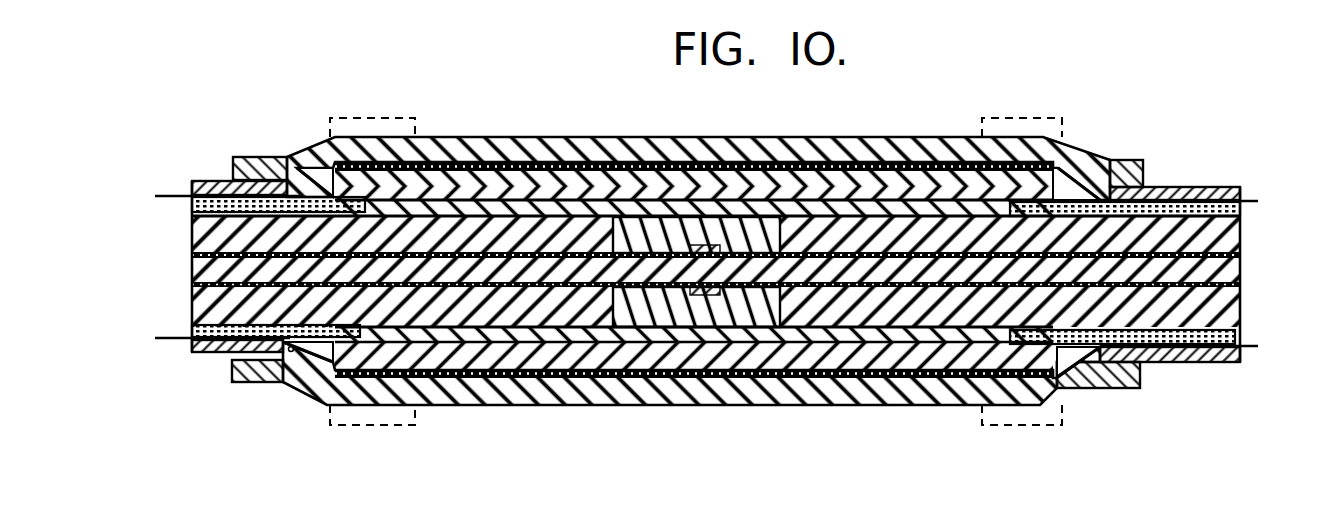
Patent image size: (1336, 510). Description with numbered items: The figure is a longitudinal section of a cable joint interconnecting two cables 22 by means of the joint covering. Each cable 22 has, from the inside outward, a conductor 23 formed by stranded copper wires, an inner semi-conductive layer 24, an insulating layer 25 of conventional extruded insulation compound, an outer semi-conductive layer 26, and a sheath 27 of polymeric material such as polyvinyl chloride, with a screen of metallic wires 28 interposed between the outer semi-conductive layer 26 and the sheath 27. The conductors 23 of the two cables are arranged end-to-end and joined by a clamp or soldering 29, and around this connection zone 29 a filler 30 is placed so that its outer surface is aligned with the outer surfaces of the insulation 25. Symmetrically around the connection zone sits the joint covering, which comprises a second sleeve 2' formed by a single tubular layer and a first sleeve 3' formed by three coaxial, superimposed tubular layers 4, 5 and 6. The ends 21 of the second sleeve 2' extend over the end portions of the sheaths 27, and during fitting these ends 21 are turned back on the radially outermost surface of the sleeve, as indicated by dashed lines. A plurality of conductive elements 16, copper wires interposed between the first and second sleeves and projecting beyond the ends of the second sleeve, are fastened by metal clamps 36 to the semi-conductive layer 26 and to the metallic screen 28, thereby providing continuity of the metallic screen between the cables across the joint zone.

The second sleeve 2' is at (696, 247).
The first sleeve 3' is at (694, 233).
The tubular layer 4 is at (831, 205).
The tubular layer 5 is at (880, 185).
The tubular layer 6 is at (930, 163).
The conductive elements 16 is at (1088, 175).
The ends of the second sleeve 21 is at (257, 160).
The cable 22 is at (193, 178).
The conductor 23 is at (200, 259).
The inner semi-conductive layer 24 is at (455, 245).
The insulating layer 25 is at (505, 235).
The outer semi-conductive layer 26 is at (192, 205).
The sheath 27 is at (1165, 187).
The screen of metallic wires 28 is at (160, 340).
The connection of the conductors 29 is at (712, 249).
The filler 30 is at (683, 320).
The metal clamps 36 is at (302, 185).